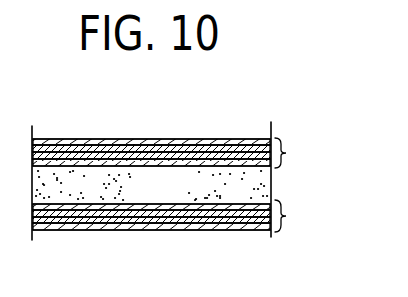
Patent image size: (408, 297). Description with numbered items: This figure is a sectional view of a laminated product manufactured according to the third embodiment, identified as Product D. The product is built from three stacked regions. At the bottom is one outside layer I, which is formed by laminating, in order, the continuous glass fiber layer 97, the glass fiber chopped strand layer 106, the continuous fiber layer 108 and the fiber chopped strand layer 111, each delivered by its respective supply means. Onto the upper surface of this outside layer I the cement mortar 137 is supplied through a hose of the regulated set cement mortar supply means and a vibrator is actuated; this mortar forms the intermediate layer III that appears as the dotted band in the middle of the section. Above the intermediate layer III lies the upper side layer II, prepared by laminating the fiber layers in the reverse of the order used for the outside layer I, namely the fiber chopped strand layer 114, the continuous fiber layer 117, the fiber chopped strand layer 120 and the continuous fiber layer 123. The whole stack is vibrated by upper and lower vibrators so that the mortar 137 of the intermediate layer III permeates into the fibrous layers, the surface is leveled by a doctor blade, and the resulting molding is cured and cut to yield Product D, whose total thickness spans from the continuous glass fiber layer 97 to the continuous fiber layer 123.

The continuous glass fiber layer 97 is at (53, 226).
The glass fiber chopped strand layer 106 is at (83, 222).
The continuous fiber layer 108 is at (130, 213).
The fiber chopped strand layer 111 is at (178, 206).
The fiber chopped strand layer 114 is at (60, 155).
The continuous fiber layer 117 is at (101, 153).
The fiber chopped strand layer 120 is at (142, 148).
The continuous fiber layer 123 is at (200, 146).
The cement mortar 137 is at (179, 196).
The Product D is at (254, 130).
The outside layer I is at (293, 224).
The upper side layer II is at (298, 162).
The intermediate layer III is at (316, 195).